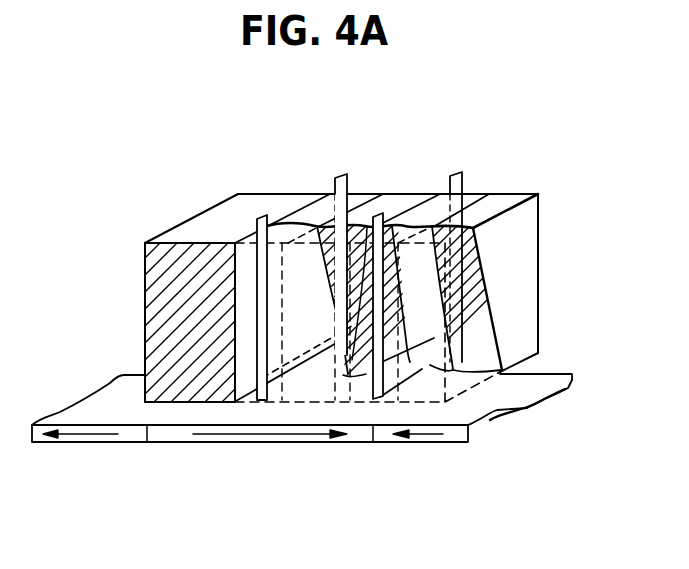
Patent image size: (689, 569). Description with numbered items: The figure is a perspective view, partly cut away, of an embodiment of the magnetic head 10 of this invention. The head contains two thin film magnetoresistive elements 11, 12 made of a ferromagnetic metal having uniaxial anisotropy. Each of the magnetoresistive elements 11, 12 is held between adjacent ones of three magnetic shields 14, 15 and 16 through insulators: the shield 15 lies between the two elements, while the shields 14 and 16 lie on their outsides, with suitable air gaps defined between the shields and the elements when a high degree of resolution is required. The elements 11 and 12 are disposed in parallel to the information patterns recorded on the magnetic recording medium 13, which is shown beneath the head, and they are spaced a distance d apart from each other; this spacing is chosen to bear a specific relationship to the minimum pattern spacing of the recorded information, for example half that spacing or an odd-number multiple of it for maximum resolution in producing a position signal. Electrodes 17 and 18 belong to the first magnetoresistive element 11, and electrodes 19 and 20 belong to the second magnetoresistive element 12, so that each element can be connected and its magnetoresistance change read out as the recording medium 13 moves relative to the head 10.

The block assembly 10 is at (547, 219).
The thin film magnetoresistive element 11 is at (270, 228).
The thin film magnetoresistive element 12 is at (418, 372).
The magnetic recording medium 13 is at (104, 401).
The magnetic shield 14 is at (260, 198).
The magnetic shield 15 is at (400, 200).
The magnetic shield 16 is at (507, 200).
The electrode 17 is at (258, 218).
The electrode 18 is at (343, 175).
The electrode 19 is at (378, 215).
The electrode 20 is at (458, 175).